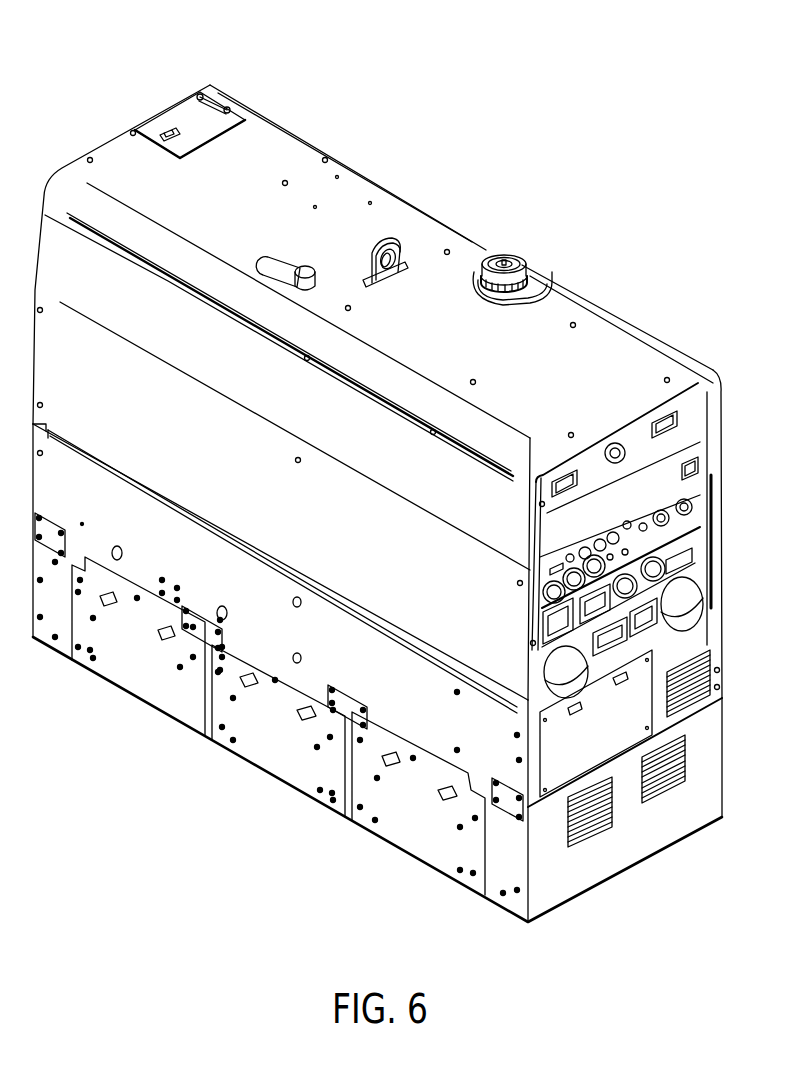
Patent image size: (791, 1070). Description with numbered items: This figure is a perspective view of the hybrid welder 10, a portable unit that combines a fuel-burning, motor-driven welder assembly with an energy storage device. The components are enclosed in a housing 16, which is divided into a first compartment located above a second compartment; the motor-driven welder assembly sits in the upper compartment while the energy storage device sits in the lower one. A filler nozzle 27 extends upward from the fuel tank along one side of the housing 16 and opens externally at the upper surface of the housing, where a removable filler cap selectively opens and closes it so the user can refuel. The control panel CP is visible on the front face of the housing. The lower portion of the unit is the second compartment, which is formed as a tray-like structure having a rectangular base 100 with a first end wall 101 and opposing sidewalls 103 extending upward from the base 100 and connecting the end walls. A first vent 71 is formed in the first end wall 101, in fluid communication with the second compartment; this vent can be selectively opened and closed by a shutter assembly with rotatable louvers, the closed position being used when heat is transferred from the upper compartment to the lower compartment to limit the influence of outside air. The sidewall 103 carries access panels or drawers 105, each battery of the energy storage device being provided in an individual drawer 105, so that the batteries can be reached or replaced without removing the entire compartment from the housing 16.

The hybrid welder 10 is at (382, 495).
The housing 16 is at (588, 297).
The filler nozzle 27 is at (507, 256).
The control panel CP is at (686, 522).
The first vent 71 is at (663, 790).
The base 100 is at (379, 695).
The first end wall 101 is at (654, 814).
The sidewall 103 is at (52, 598).
The access panels or drawers 105 is at (407, 810).